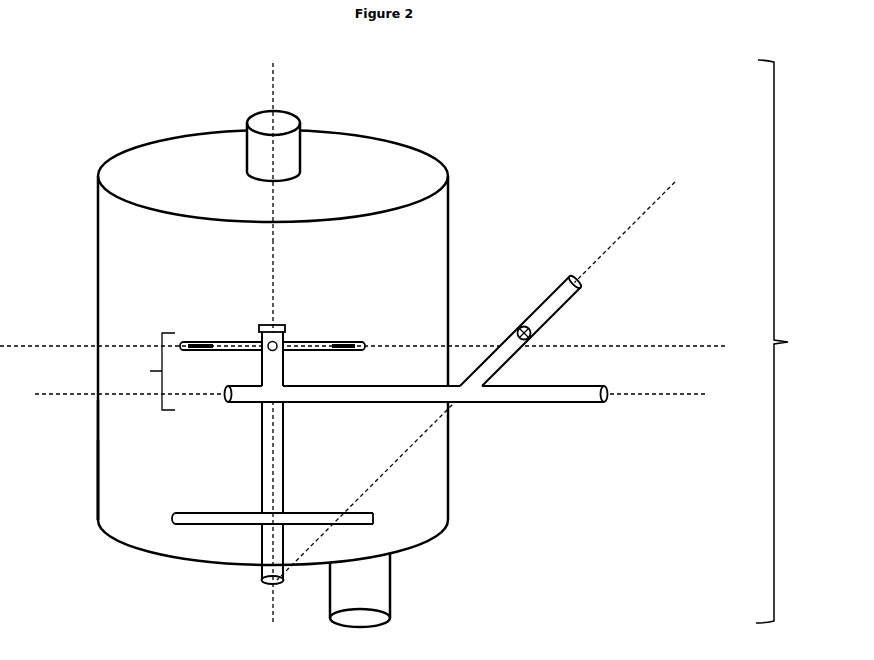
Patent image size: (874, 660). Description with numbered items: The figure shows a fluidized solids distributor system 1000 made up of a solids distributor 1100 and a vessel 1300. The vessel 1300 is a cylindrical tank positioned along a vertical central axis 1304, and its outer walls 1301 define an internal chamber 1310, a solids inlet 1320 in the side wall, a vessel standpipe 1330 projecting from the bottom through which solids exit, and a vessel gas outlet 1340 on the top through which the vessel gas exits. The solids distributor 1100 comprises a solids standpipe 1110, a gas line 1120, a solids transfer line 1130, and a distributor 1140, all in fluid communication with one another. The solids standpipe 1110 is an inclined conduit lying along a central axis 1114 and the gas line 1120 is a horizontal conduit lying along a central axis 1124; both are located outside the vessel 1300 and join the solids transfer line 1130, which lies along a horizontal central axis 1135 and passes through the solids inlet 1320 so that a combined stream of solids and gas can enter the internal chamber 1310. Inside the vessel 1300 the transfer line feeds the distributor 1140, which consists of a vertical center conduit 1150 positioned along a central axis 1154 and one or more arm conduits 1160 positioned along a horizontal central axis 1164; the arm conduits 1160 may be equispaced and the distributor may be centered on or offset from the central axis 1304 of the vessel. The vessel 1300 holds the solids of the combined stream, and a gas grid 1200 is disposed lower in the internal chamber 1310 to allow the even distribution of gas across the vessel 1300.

The solids distributor system 1000 is at (797, 341).
The solids distributor 1100 is at (144, 371).
The solids standpipe 1110 is at (535, 292).
The central axis 1114 is at (643, 203).
The gas line 1120 is at (545, 410).
The central axis 1124 is at (673, 405).
The solids transfer line 1130 is at (407, 408).
The central axis 1135 is at (63, 400).
The distributor 1140 is at (253, 368).
The center conduit 1150 is at (258, 367).
The central axis 1154 is at (277, 243).
The arm conduits 1160 is at (215, 337).
The central axis 1164 is at (673, 345).
The gas grid 1200 is at (290, 537).
The vessel 1300 is at (96, 215).
The outer walls 1301 is at (95, 470).
The central axis 1304 is at (277, 87).
The internal chamber 1310 is at (175, 466).
The solids inlet 1320 is at (448, 410).
The vessel standpipe 1330 is at (398, 588).
The vessel gas outlet 1340 is at (302, 153).